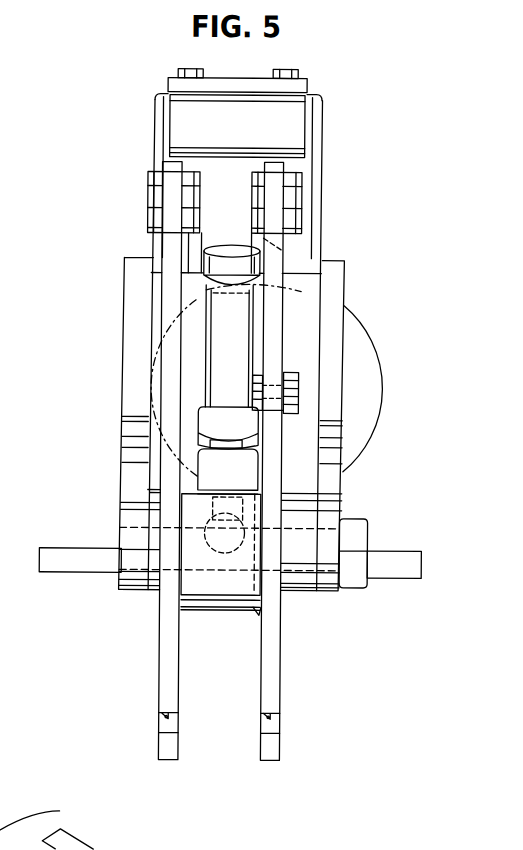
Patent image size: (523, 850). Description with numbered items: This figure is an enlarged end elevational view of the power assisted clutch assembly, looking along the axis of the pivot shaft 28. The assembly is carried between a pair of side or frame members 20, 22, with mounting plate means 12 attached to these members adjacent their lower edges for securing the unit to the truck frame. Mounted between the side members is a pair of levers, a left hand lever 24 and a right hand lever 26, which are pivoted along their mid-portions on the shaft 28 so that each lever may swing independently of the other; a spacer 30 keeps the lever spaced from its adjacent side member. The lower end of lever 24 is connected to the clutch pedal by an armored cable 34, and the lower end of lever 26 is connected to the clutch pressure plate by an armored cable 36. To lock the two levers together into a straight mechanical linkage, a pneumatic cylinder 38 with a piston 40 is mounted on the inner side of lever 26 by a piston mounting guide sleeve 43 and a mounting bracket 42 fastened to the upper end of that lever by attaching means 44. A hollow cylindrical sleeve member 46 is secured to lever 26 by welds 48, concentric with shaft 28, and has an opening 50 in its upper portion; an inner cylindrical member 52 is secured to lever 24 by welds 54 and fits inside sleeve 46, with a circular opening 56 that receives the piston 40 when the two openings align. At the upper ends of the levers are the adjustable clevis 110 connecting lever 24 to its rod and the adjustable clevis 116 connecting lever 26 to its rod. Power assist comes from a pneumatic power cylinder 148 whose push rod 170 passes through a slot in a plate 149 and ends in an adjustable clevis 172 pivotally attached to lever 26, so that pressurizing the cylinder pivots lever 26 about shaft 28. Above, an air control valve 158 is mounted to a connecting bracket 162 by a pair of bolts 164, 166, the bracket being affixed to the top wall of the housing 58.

The mounting plate means 12 is at (58, 549).
The side member 20 is at (130, 308).
The side member 22 is at (340, 312).
The left hand lever 24 is at (159, 655).
The right hand lever 26 is at (282, 657).
The shaft 28 is at (122, 598).
The spacer 30 is at (150, 490).
The armored cable 34 is at (163, 718).
The armored cable 36 is at (281, 722).
The pneumatic cylinder 38 is at (245, 326).
The piston 40 is at (229, 544).
The mounting bracket 42 is at (220, 243).
The piston mounting guide sleeve 43 is at (203, 440).
The attaching means 44 is at (283, 253).
The cylindrical sleeve member 46 is at (222, 607).
The welds 48 is at (257, 612).
The opening 50 is at (213, 490).
The inner cylindrical member 52 is at (204, 606).
The welds 54 is at (182, 599).
The circular opening 56 is at (224, 532).
The housing 58 is at (155, 98).
The adjustable clevis 110 is at (150, 190).
The adjustable clevis 116 is at (300, 188).
The pneumatic power cylinder 148 is at (382, 361).
The plate 149 is at (316, 349).
The air control valve 158 is at (294, 112).
The connecting bracket 162 is at (235, 85).
The bolt 164 is at (182, 70).
The bolt 166 is at (297, 72).
The push rod 170 is at (282, 380).
The adjustable clevis 172 is at (300, 402).